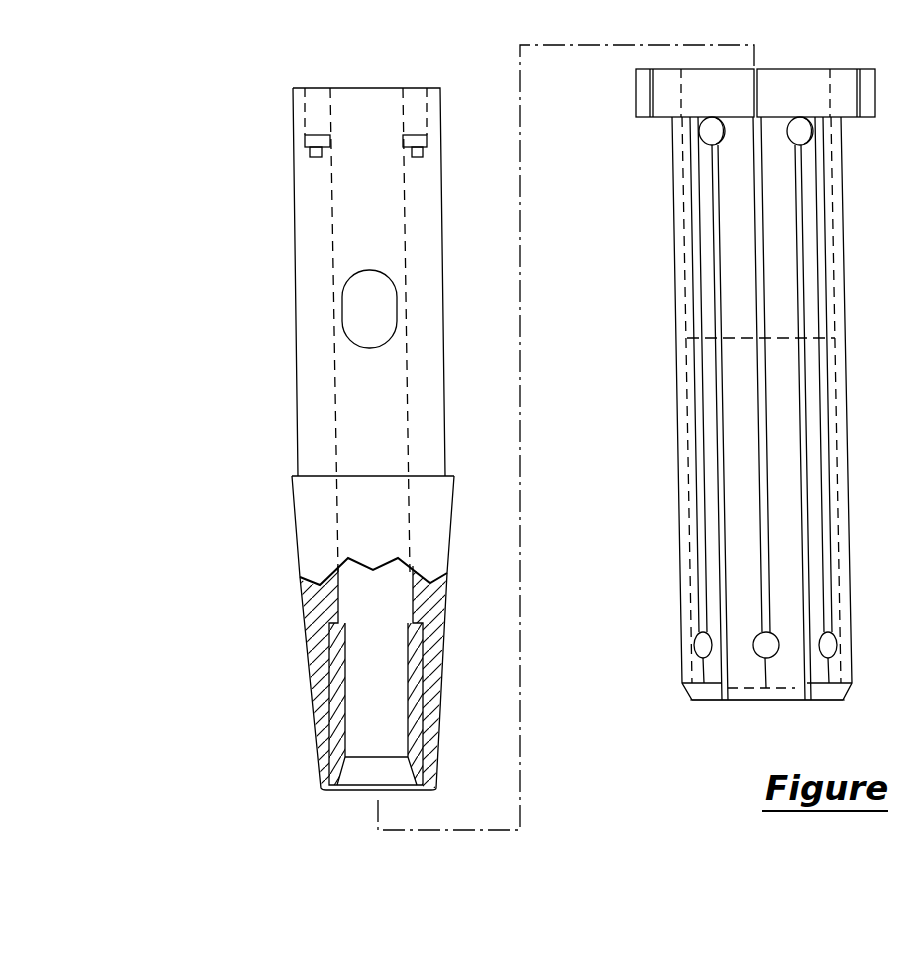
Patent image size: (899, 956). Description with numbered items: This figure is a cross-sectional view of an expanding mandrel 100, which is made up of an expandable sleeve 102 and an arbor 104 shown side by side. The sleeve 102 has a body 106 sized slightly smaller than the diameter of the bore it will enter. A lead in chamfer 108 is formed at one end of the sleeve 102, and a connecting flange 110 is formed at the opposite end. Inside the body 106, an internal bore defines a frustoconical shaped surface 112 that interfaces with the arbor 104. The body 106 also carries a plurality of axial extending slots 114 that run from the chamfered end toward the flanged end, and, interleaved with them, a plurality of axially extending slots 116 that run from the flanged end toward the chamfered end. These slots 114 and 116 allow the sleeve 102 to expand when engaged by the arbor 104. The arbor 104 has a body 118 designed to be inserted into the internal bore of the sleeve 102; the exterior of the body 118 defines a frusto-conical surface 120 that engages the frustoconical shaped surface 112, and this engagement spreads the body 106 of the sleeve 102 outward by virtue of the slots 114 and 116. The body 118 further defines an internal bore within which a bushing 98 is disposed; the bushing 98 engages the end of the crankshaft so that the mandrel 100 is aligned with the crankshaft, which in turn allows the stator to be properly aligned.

The expanding mandrel 100 is at (478, 63).
The expandable sleeve 102 is at (715, 430).
The arbor 104 is at (306, 439).
The body 106 is at (708, 454).
The lead in chamfer 108 is at (686, 685).
The connecting flange 110 is at (645, 103).
The frustoconical shaped surface 112 is at (705, 248).
The axial extending slots 114 is at (702, 288).
The axially extending slots 116 is at (727, 421).
The body 118 is at (318, 378).
The frusto-conical surface 120 is at (312, 533).
The bushing 98 is at (342, 654).